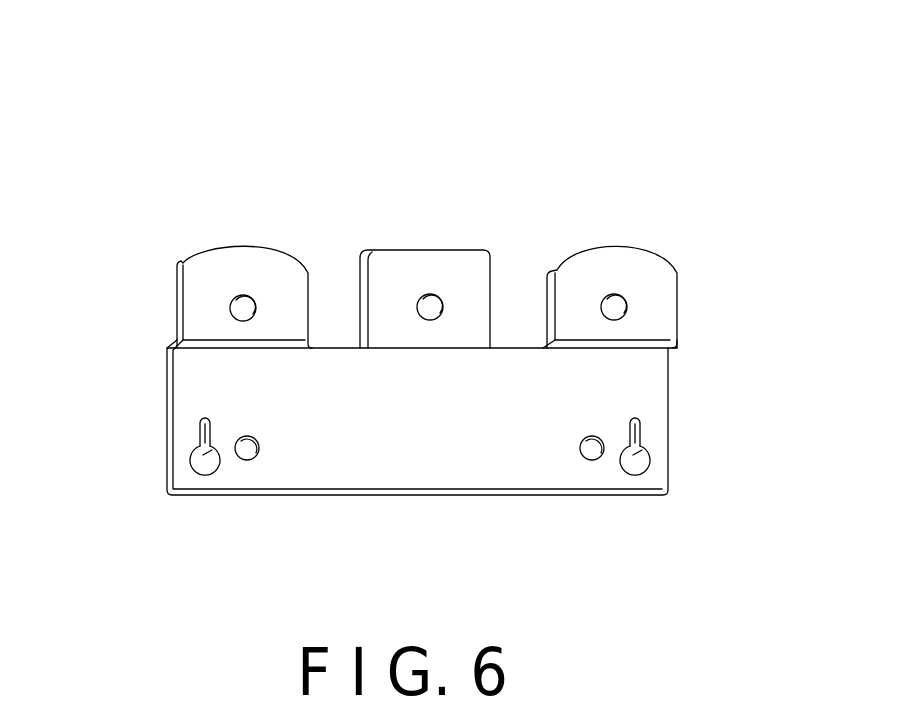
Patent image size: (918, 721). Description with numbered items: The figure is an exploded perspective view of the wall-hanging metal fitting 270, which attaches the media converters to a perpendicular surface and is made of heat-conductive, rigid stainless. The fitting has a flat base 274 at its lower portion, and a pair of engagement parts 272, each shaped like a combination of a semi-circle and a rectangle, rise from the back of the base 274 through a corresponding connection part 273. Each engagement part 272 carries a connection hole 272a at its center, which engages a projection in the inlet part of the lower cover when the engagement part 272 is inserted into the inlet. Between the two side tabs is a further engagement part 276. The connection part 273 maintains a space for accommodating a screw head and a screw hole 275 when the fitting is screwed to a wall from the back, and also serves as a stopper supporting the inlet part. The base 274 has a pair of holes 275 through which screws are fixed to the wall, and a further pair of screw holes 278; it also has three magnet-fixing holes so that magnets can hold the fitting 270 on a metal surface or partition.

The wall-hanging metal fitting 270 is at (247, 50).
The engagement part 272 is at (197, 288).
The connection hole 272a is at (248, 297).
The connection part 273 is at (197, 343).
The base 274 is at (648, 392).
The screw hole 275 is at (197, 457).
The engagement part 276 is at (475, 270).
The screw hole 278 is at (430, 294).